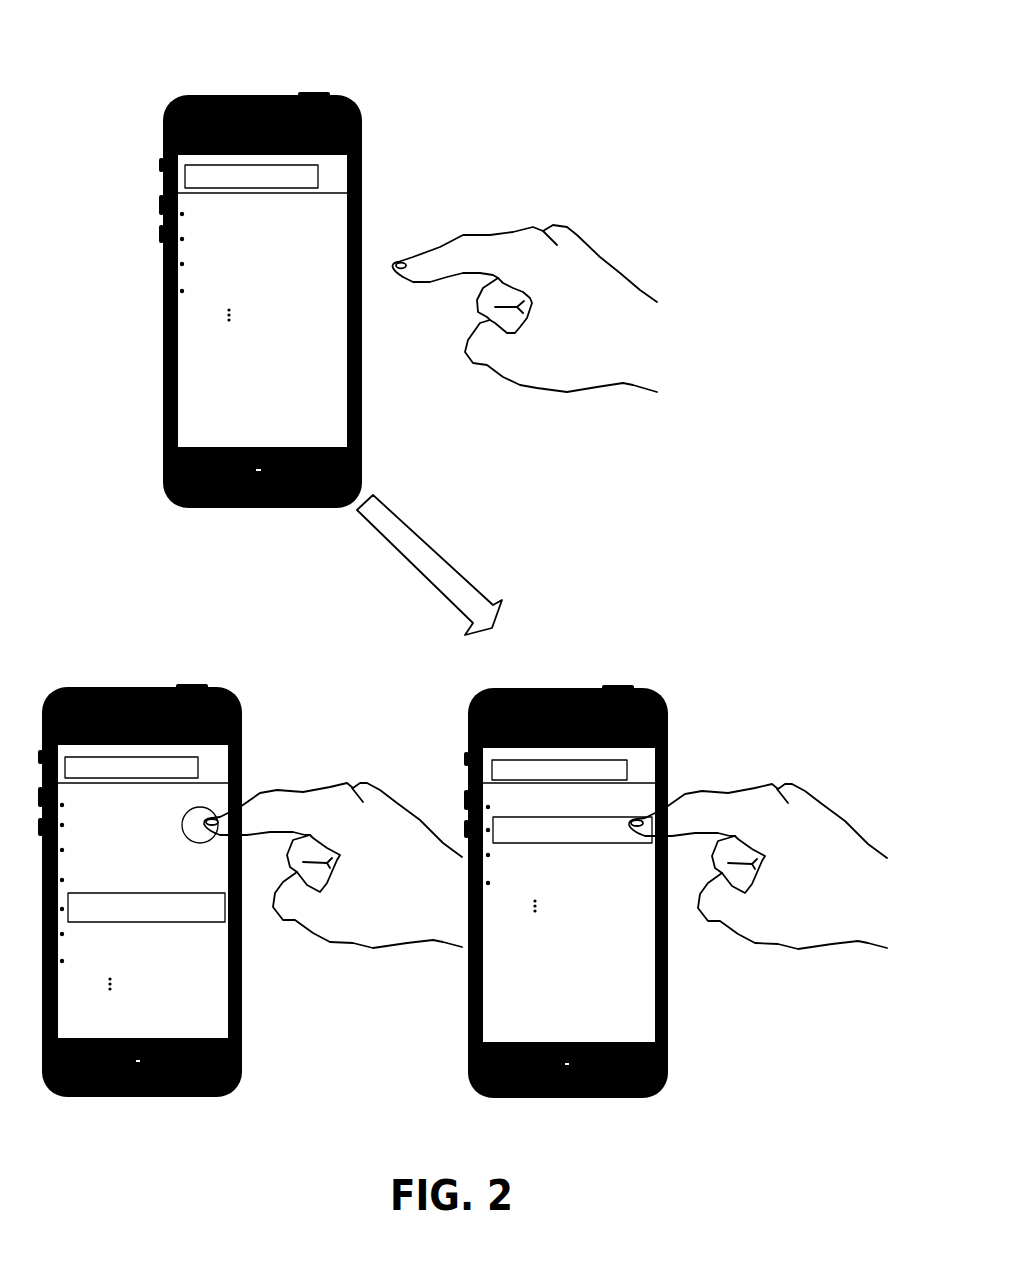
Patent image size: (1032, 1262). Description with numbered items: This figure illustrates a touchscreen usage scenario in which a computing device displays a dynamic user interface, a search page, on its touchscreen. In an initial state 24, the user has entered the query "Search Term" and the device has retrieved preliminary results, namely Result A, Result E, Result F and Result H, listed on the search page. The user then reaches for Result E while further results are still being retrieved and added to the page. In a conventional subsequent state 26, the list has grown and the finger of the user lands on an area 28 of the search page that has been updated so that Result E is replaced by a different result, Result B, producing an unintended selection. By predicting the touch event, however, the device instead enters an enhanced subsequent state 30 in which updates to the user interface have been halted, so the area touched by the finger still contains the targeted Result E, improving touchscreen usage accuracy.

The initial state 24 is at (427, 73).
The conventional subsequent state 26 is at (255, 667).
The area 28 is at (203, 843).
The enhanced subsequent state 30 is at (717, 667).